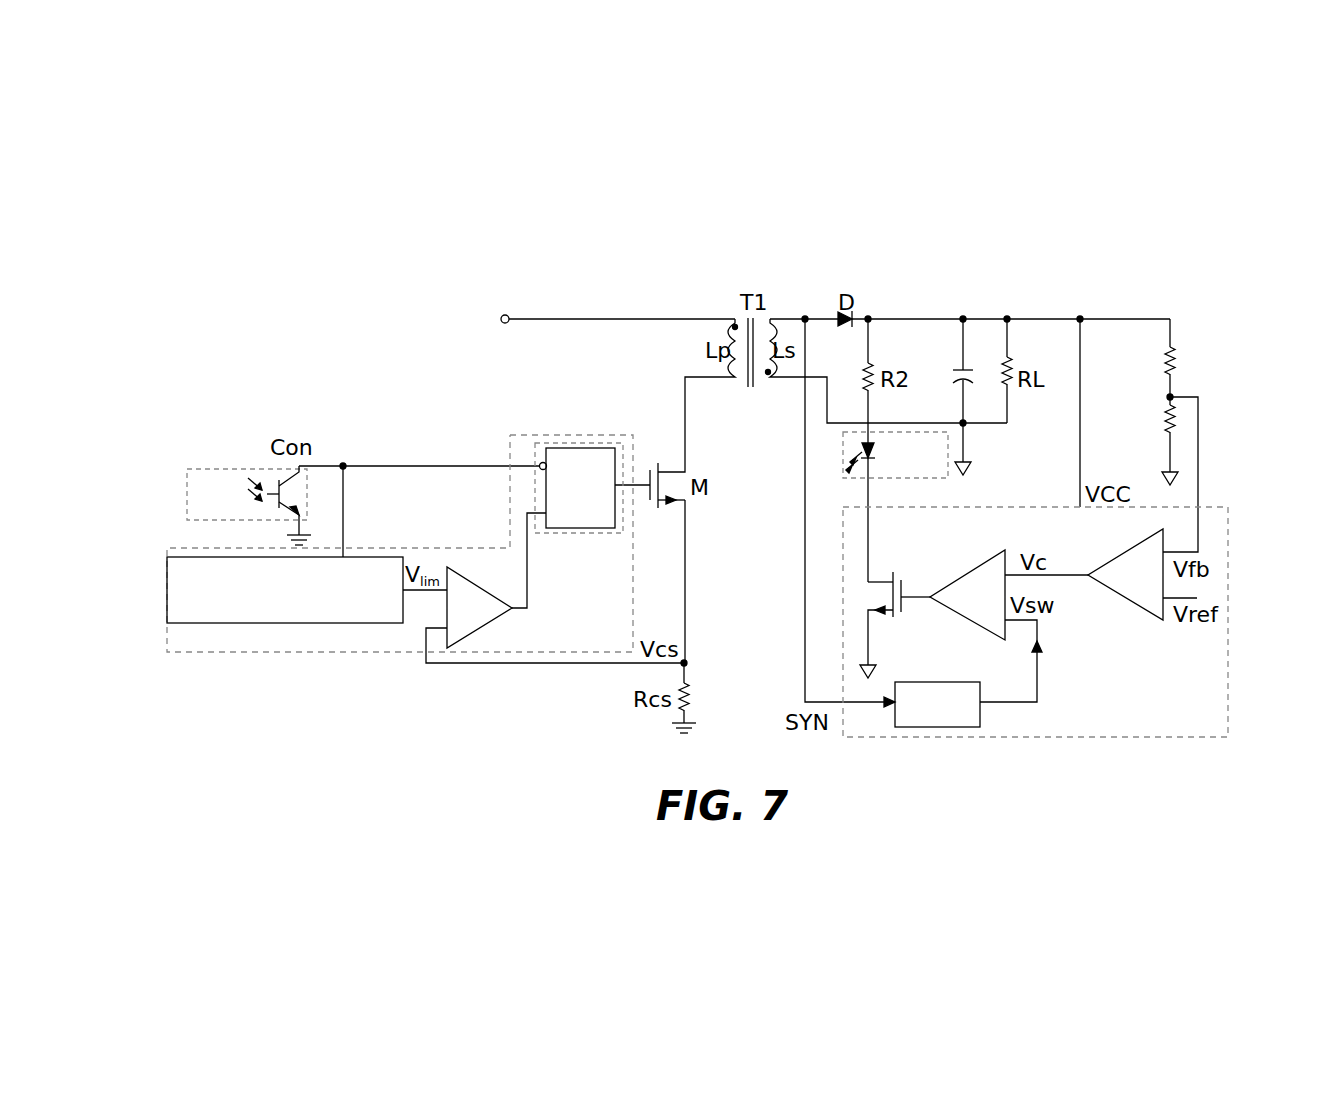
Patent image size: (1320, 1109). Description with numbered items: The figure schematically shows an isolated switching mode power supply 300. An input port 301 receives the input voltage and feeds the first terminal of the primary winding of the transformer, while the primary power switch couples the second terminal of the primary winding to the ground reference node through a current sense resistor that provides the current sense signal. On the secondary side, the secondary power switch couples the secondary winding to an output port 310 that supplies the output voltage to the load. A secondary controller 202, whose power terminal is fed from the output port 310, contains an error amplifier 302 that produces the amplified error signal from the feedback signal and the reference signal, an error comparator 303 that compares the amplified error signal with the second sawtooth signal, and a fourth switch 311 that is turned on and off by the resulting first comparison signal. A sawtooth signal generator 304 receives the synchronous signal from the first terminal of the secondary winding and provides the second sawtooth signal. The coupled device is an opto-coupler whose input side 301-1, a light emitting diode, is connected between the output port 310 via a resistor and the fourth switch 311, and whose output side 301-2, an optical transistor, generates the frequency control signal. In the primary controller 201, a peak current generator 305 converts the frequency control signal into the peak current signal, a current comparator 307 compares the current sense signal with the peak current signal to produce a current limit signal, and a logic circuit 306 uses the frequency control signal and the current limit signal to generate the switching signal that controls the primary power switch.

The switching mode power supply 300 is at (270, 359).
The input port 301 is at (561, 319).
The input side of the coupled device 301-1 is at (895, 455).
The output side of the coupled device 301-2 is at (245, 505).
The output port 310 is at (1032, 399).
The primary controller 201 is at (400, 543).
The secondary controller 202 is at (1035, 622).
The peak current generator 305 is at (285, 590).
The logic circuit 306 is at (571, 529).
The current comparator 307 is at (457, 607).
The error amplifier 302 is at (1142, 574).
The error comparator 303 is at (953, 595).
The sawtooth signal generator 304 is at (937, 704).
The fourth switch 311 is at (874, 625).